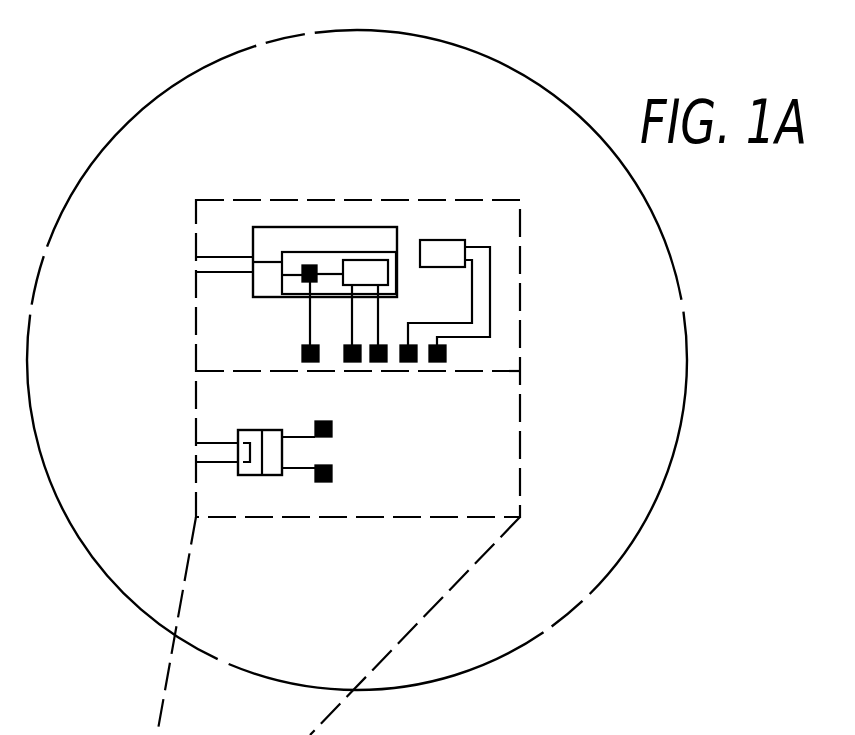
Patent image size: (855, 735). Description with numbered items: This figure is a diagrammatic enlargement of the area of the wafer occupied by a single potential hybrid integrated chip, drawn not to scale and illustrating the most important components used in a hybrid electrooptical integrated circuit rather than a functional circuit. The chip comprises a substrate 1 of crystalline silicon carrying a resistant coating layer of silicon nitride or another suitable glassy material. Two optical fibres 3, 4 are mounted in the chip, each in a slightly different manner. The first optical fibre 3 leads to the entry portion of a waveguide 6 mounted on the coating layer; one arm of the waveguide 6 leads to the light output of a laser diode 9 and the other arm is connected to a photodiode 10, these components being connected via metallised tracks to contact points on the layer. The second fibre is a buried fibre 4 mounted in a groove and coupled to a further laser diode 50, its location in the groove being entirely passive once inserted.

The substrate 1 is at (228, 337).
The optical fibre 3 is at (228, 262).
The optical fibre 4 is at (225, 452).
The waveguide 6 is at (340, 232).
The laser diode 9 is at (445, 240).
The photodiode 10 is at (388, 276).
The laser diode 50 is at (270, 470).